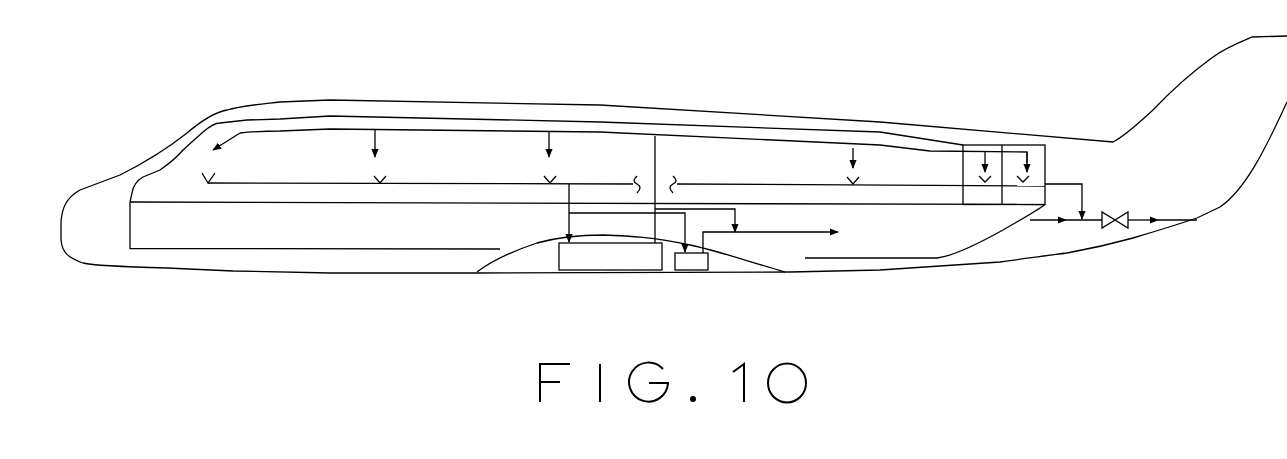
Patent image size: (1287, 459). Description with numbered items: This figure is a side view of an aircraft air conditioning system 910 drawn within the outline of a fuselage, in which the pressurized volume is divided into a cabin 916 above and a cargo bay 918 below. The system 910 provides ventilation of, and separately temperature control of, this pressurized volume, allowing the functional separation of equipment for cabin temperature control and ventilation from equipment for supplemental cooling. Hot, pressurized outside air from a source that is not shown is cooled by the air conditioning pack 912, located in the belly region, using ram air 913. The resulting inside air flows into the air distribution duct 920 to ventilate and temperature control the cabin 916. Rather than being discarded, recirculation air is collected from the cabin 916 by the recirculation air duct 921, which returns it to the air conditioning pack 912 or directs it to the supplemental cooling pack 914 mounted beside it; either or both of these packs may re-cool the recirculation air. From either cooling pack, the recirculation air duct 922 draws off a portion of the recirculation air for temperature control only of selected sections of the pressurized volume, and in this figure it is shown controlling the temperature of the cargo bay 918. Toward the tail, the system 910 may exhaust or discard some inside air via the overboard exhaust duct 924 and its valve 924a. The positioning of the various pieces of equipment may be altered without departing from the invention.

The system 910 is at (177, 292).
The air conditioning pack 912 is at (607, 272).
The ram air 913 is at (547, 257).
The supplemental cooling pack 914 is at (689, 271).
The cabin 916 is at (340, 176).
The cargo bay 918 is at (360, 237).
The air distribution duct 920 is at (636, 132).
The recirculation air duct 921 is at (477, 178).
The recirculation air duct 922 is at (807, 233).
The overboard exhaust duct 924 is at (1062, 238).
The valve 924a is at (1122, 229).